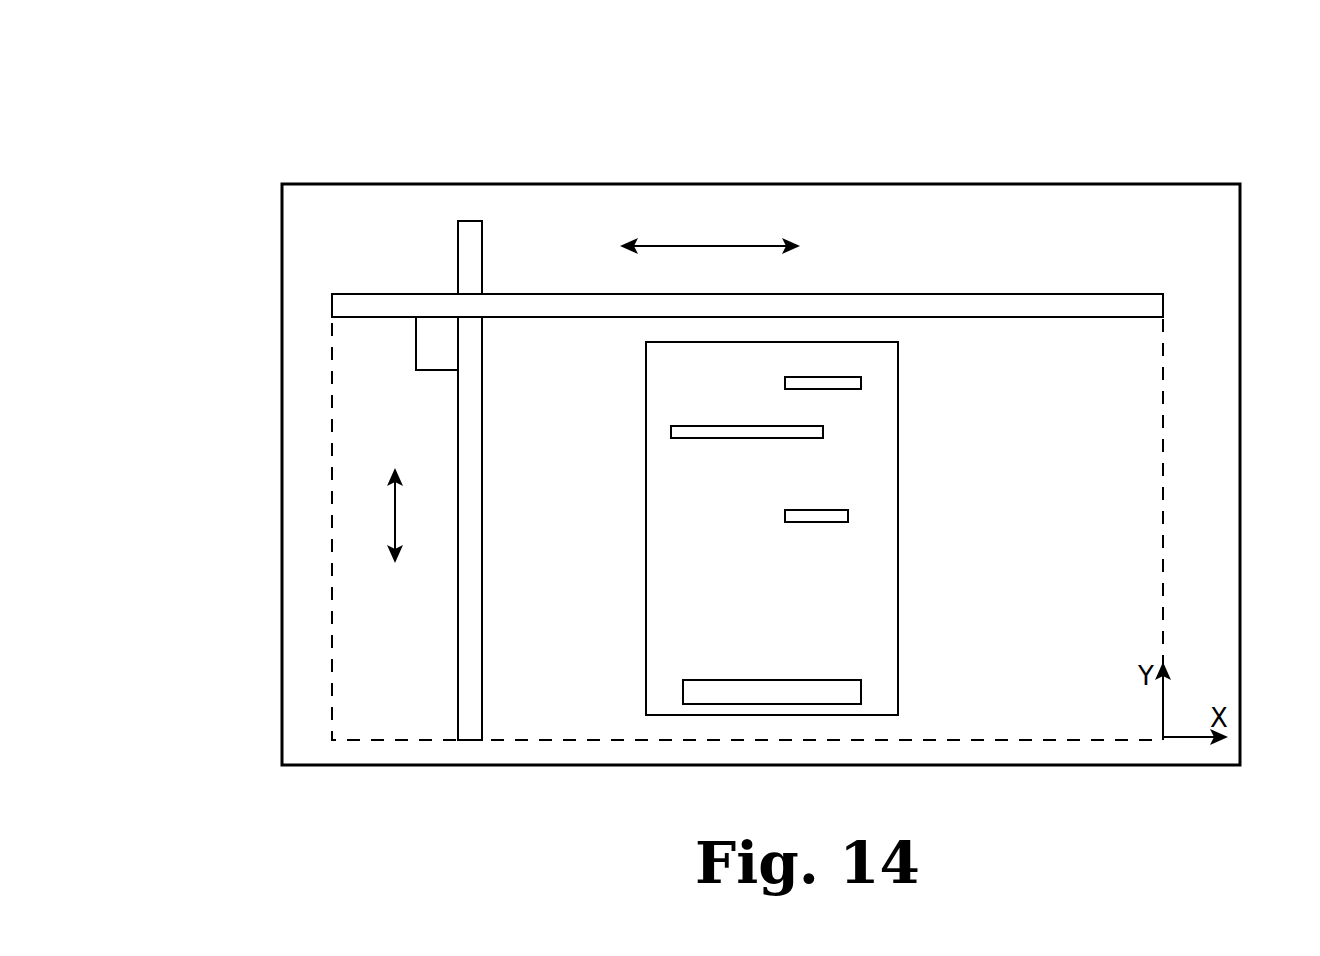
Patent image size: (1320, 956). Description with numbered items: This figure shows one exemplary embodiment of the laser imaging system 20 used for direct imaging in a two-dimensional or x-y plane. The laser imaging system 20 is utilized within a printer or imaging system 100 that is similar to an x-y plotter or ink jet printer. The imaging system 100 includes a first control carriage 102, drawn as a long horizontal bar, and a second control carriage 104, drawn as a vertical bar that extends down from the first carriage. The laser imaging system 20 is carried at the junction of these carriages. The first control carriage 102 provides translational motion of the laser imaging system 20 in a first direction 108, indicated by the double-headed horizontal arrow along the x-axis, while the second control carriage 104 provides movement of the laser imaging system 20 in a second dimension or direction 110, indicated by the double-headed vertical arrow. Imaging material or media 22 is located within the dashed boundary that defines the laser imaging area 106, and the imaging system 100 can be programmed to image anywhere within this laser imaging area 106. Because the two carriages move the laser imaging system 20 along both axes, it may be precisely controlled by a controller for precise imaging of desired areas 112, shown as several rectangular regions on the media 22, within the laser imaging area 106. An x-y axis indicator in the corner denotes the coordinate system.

The imaging system 100 is at (452, 97).
The first control carriage 102 is at (373, 294).
The second control carriage 104 is at (484, 250).
The laser imaging area 106 is at (1165, 484).
The first direction 108 is at (698, 246).
The second direction 110 is at (396, 515).
The desired areas 112 is at (817, 689).
The laser imaging system 20 is at (416, 348).
The imaging material or media 22 is at (886, 703).